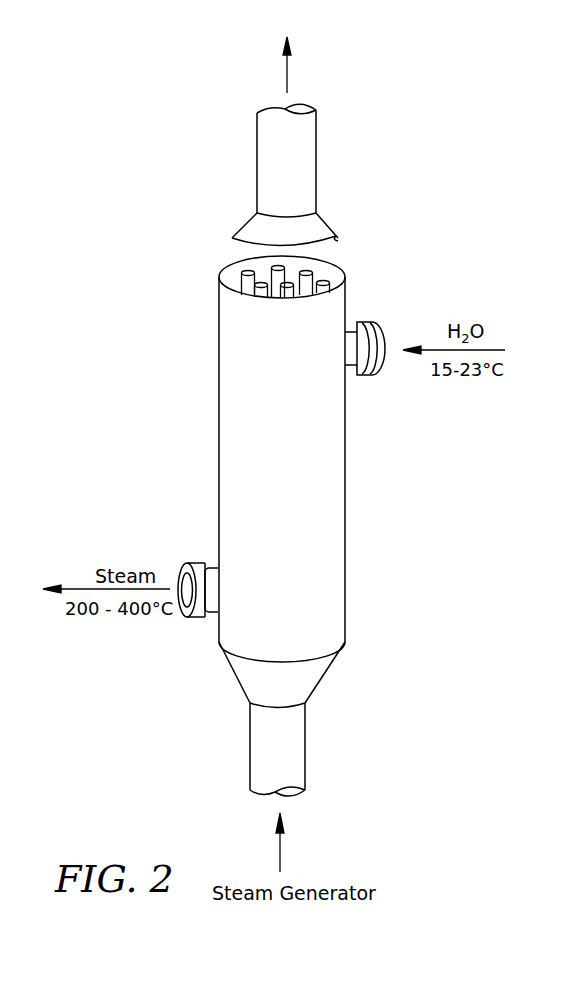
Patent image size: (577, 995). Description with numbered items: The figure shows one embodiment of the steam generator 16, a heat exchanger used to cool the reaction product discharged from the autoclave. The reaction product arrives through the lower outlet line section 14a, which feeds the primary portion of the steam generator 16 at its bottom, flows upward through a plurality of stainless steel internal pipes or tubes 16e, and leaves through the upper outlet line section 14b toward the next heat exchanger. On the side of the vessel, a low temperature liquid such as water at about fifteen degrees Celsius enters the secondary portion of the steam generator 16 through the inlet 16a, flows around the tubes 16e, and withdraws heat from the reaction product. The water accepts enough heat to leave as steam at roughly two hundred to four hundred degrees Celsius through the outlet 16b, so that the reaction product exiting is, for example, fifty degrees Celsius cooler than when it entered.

The outlet line section 14a is at (300, 748).
The outlet line section 14b is at (316, 165).
The steam generator 16 is at (338, 520).
The inlet 16a is at (370, 376).
The outlet 16b is at (197, 563).
The internal tubes 16e is at (328, 279).